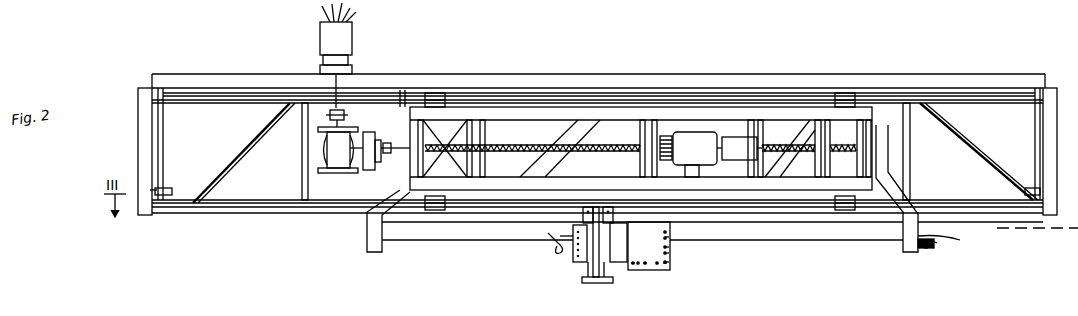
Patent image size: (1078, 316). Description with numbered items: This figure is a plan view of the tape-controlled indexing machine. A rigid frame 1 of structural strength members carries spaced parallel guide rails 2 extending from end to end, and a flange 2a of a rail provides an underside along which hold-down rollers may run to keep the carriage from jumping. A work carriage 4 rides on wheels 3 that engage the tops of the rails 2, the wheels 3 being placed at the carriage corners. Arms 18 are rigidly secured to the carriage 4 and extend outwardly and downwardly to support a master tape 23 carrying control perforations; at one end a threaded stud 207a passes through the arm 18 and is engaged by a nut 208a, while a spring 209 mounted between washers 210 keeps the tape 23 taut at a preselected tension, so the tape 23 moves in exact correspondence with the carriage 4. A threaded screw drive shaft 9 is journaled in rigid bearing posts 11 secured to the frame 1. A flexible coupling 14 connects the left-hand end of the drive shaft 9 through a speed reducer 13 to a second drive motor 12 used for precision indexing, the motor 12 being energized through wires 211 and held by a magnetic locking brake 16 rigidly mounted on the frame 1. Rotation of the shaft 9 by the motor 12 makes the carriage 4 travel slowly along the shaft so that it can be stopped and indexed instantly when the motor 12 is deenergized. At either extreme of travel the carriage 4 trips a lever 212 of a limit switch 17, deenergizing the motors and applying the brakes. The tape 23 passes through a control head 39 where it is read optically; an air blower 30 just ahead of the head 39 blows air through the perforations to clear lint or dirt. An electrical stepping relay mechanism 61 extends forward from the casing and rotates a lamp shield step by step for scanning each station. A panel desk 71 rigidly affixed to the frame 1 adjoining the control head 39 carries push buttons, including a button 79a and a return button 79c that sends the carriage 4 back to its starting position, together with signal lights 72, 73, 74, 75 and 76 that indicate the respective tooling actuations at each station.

The rigid frame 1 is at (977, 150).
The guide rails 2 is at (180, 103).
The flange 2a is at (212, 95).
The wheels 3 is at (445, 97).
The work carriage 4 is at (778, 112).
The threaded screw drive shaft 9 is at (613, 152).
The bearing posts 11 is at (372, 165).
The second drive motor 12 is at (322, 65).
The speed reducer 13 is at (322, 157).
The flexible coupling 14 is at (363, 128).
The magnetic locking brake 16 is at (352, 33).
The limit switch 17 is at (153, 190).
The arms 18 is at (935, 238).
The master tape 23 is at (428, 248).
The air blower 30 is at (560, 252).
The control head 39 is at (577, 262).
The electrical stepping relay mechanism 61 is at (593, 287).
The panel desk 71 is at (665, 265).
The signal light 72 is at (668, 262).
The signal light 73 is at (668, 253).
The signal light 74 is at (667, 247).
The signal light 75 is at (667, 237).
The signal light 76 is at (663, 232).
The button 79a is at (633, 263).
The return button 79c is at (645, 263).
The threaded stud 207a is at (932, 248).
The nut 208a is at (937, 243).
The spring 209 is at (926, 250).
The washers 210 is at (322, 122).
The wires 211 is at (328, 18).
The lever 212 is at (162, 188).